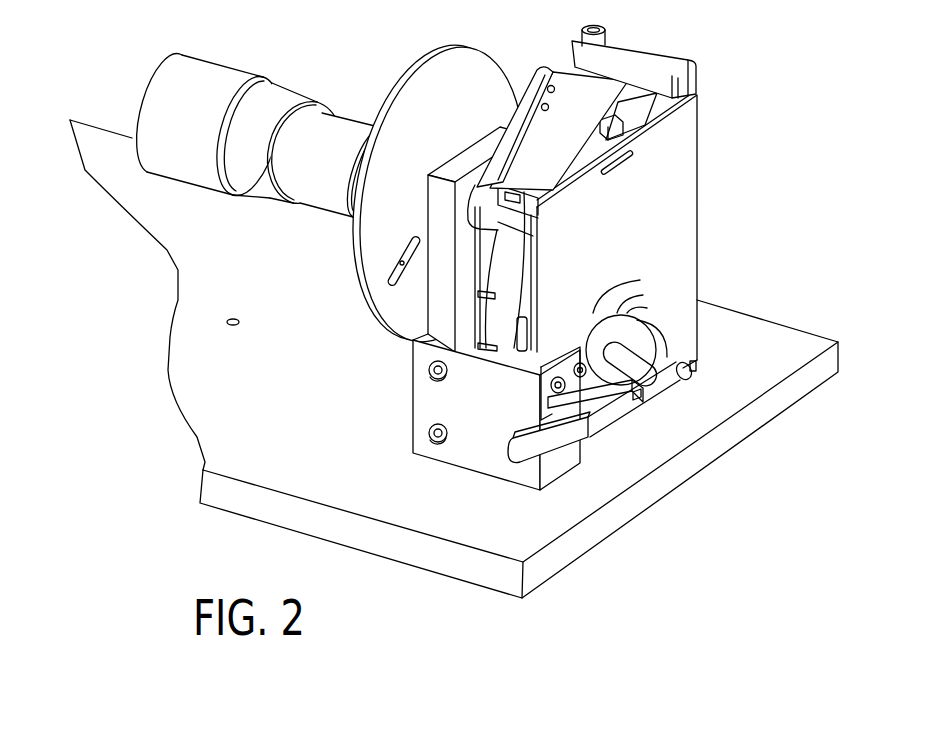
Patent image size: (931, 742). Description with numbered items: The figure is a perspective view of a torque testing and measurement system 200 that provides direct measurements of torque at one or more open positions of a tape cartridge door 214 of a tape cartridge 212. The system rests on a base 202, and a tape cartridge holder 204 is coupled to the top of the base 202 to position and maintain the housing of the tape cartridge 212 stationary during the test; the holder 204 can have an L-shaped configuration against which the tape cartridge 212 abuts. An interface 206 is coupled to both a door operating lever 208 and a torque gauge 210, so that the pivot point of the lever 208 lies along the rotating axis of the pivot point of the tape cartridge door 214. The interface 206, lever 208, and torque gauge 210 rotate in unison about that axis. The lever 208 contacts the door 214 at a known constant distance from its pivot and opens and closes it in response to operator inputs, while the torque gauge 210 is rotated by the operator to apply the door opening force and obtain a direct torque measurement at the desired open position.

The torque testing and measurement system 200 is at (537, 258).
The base 202 is at (772, 364).
The tape cartridge holder 204 is at (385, 393).
The interface 206 is at (442, 85).
The door operating lever 208 is at (531, 88).
The torque gauge 210 is at (249, 52).
The tape cartridge 212 is at (652, 233).
The tape cartridge door 214 is at (586, 134).